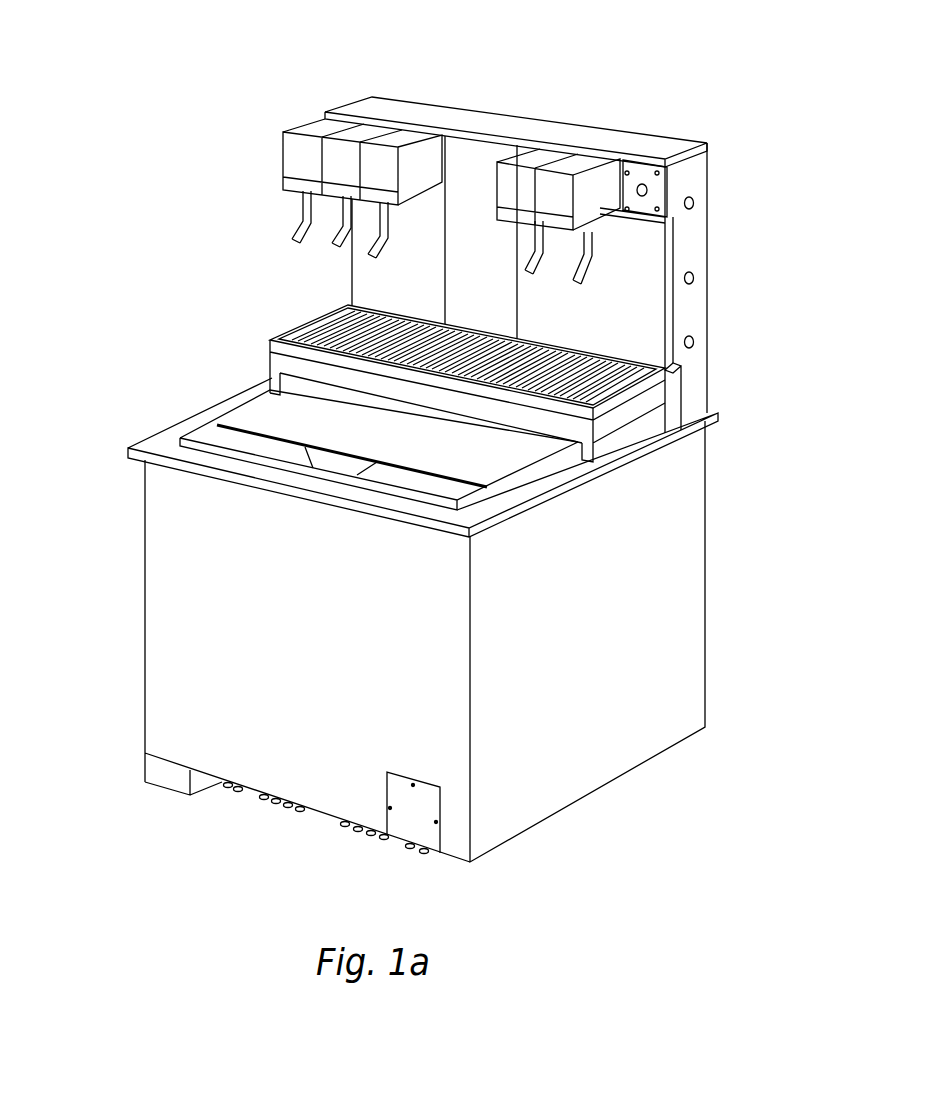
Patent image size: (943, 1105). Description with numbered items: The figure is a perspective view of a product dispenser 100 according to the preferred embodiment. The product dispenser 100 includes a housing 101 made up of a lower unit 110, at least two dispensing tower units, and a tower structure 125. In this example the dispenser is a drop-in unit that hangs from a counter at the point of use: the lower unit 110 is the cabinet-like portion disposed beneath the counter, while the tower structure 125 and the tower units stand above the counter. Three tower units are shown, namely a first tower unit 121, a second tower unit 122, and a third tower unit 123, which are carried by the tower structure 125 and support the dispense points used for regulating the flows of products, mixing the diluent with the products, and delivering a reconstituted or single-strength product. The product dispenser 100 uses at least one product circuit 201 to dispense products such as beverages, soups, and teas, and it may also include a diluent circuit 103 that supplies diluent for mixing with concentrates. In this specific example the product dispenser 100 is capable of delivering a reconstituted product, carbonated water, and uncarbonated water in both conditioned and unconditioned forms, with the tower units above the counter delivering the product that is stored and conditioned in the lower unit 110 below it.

The product dispenser 100 is at (192, 122).
The housing 101 is at (232, 100).
The diluent circuit 103 is at (195, 167).
The product circuit 201 is at (150, 198).
The lower unit 110 is at (172, 646).
The first tower unit 121 is at (345, 287).
The second tower unit 122 is at (735, 200).
The third tower unit 123 is at (485, 150).
The tower structure 125 is at (687, 383).